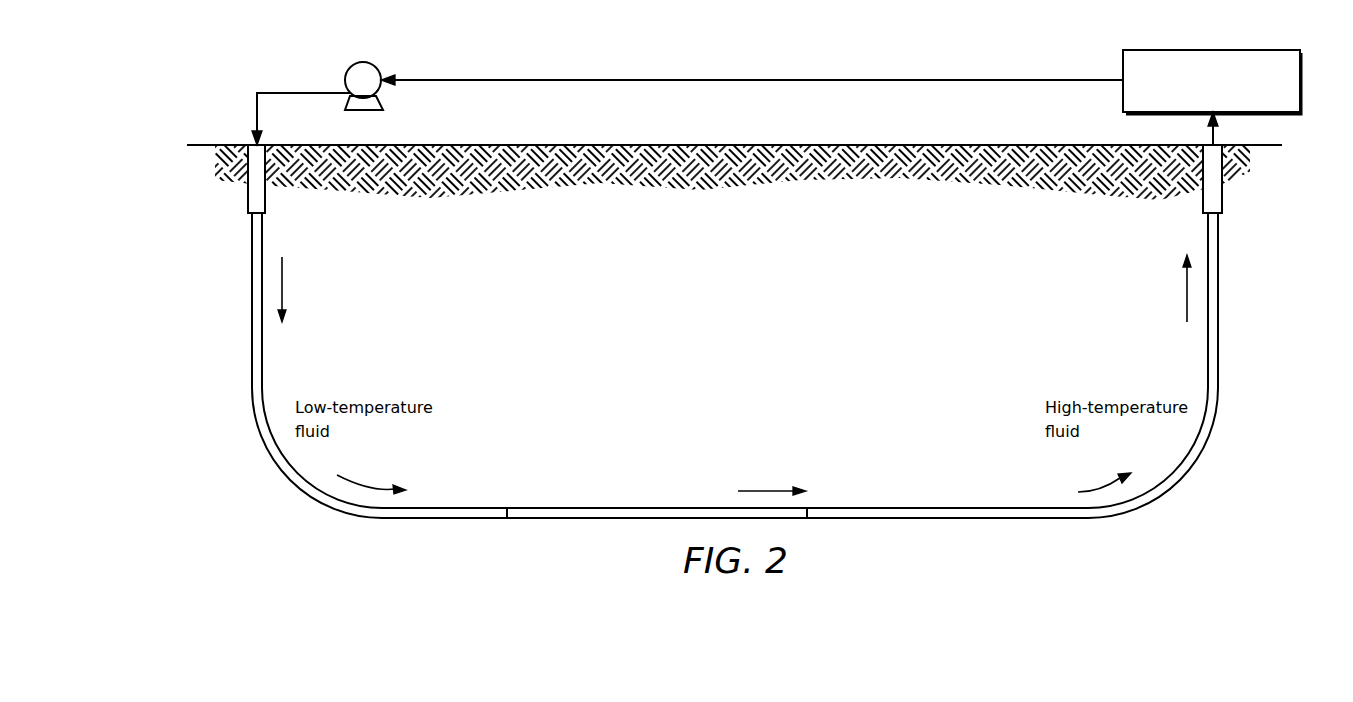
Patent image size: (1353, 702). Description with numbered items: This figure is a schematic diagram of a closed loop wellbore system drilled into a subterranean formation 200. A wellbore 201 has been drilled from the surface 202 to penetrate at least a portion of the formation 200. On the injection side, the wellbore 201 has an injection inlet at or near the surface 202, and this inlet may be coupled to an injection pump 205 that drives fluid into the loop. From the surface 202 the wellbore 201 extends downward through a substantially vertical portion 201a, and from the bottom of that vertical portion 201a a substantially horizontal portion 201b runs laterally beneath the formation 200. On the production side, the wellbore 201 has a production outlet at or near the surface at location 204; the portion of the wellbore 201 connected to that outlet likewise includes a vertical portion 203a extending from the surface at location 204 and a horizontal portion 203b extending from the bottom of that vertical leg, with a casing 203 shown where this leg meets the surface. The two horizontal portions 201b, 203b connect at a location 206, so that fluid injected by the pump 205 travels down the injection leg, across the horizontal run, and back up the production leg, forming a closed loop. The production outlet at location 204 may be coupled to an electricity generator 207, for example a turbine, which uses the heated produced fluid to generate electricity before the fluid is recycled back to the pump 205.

The subterranean formation 200 is at (803, 215).
The wellbore 201 is at (267, 193).
The substantially vertical portion 201a is at (252, 308).
The substantially horizontal portion 201b is at (448, 508).
The surface 202 is at (263, 158).
The production well casing 203 is at (1222, 183).
The vertical section of production well 203a is at (1218, 338).
The curved/bottom section of production well 203b is at (982, 508).
The location 204 is at (1203, 158).
The injection pump 205 is at (377, 62).
The location 206 is at (675, 508).
The electricity generator 207 is at (1123, 62).